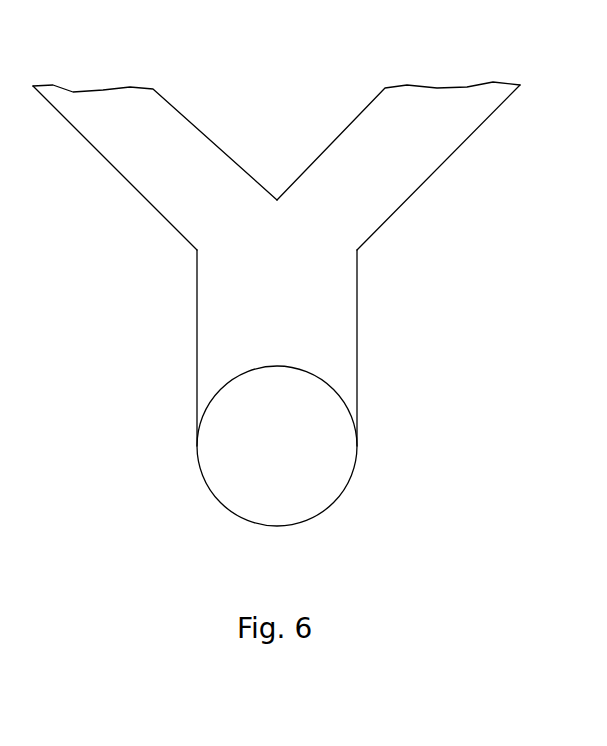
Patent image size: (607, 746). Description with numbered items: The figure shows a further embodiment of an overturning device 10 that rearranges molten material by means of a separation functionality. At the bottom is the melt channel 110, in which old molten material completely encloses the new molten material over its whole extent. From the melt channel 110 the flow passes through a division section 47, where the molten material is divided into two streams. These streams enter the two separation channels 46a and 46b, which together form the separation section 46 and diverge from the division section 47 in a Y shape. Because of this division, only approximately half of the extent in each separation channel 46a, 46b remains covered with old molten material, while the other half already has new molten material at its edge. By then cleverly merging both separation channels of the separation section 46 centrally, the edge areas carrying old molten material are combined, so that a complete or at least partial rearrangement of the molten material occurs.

The overturning device 10 is at (315, 280).
The separation section 46 is at (289, 240).
The separation channel 46a is at (168, 145).
The separation channel 46b is at (382, 125).
The division section 47 is at (183, 249).
The melt channel 110 is at (417, 362).